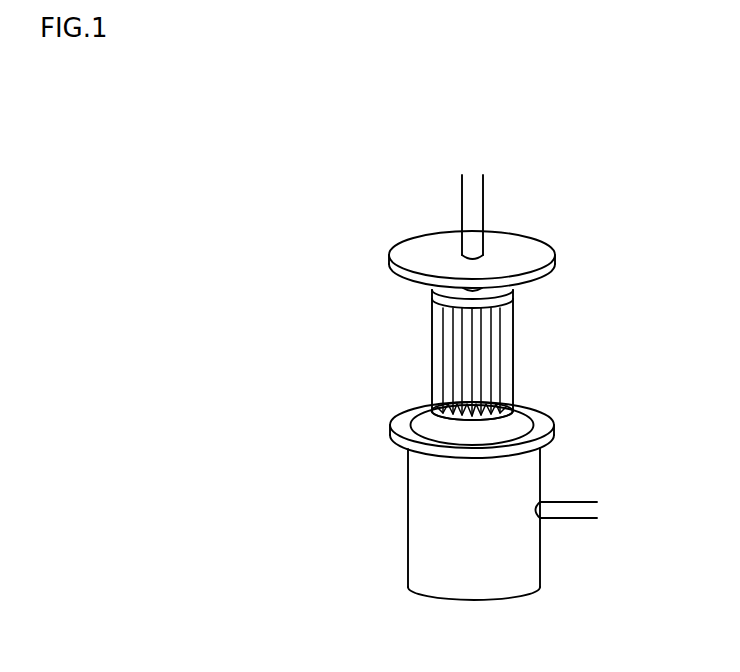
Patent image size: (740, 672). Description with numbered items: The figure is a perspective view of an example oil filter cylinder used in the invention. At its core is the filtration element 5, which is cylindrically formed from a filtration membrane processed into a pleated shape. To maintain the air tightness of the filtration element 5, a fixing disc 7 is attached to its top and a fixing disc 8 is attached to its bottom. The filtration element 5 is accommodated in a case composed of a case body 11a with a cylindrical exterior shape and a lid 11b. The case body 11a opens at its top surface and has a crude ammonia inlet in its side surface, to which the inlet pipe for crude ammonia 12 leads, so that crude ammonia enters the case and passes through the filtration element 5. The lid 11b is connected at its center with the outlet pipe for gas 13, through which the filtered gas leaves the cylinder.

The filtration element 5 is at (430, 334).
The fixing disc 7 is at (431, 297).
The fixing disc 8 is at (422, 403).
The case body 11a is at (408, 531).
The lid 11b is at (554, 262).
The inlet pipe for crude ammonia 12 is at (583, 501).
The outlet pipe for gas 13 is at (485, 216).